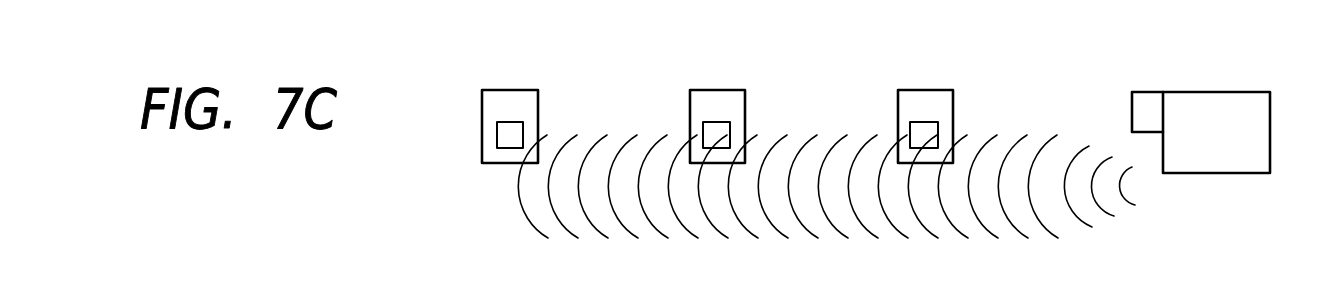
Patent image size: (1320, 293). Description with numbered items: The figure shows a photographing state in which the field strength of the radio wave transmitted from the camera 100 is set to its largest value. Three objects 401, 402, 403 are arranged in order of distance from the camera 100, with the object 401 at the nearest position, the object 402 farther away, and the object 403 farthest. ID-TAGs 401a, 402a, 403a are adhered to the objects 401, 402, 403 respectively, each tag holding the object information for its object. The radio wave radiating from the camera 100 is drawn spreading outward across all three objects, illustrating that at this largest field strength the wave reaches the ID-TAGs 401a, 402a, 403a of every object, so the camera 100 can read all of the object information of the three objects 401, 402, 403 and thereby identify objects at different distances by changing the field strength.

The camera 100 is at (1217, 92).
The object 401 is at (928, 90).
The ID-TAG 401a is at (925, 125).
The object 402 is at (720, 90).
The ID-TAG 402a is at (715, 125).
The object 403 is at (512, 90).
The ID-TAG 403a is at (508, 127).